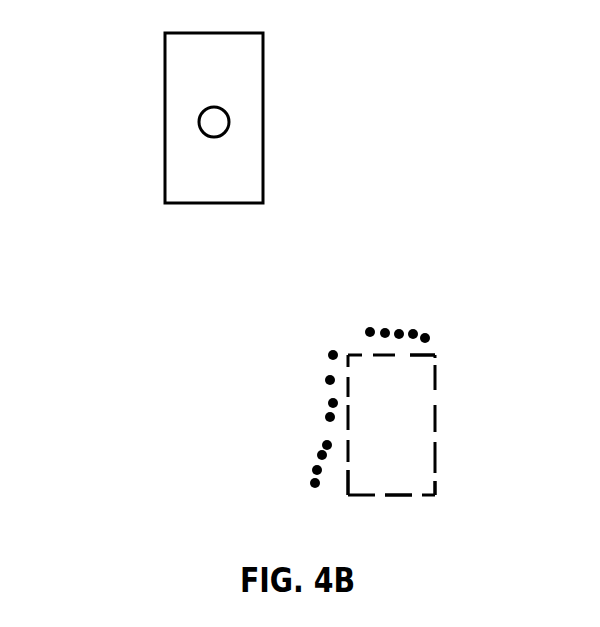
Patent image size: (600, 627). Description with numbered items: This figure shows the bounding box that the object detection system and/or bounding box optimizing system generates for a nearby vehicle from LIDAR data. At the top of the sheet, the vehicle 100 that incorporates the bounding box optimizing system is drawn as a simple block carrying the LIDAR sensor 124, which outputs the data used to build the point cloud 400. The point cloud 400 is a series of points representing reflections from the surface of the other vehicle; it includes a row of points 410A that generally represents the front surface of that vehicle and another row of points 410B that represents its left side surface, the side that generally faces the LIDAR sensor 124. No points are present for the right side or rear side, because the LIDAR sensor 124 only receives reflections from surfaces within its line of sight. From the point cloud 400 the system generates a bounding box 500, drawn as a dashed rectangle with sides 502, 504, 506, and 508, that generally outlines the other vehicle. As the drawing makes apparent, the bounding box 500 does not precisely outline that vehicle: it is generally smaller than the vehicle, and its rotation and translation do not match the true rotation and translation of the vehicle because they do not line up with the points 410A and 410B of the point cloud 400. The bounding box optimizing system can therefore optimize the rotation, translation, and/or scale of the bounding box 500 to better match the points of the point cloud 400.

The vehicle 100 is at (165, 80).
The LIDAR sensor 124 is at (199, 122).
The point cloud 400 is at (265, 335).
The row of points 410A is at (375, 297).
The row of points 410B is at (318, 346).
The bounding box 500 is at (435, 407).
The side 502 is at (425, 353).
The side 504 is at (348, 473).
The side 506 is at (435, 475).
The side 508 is at (397, 495).